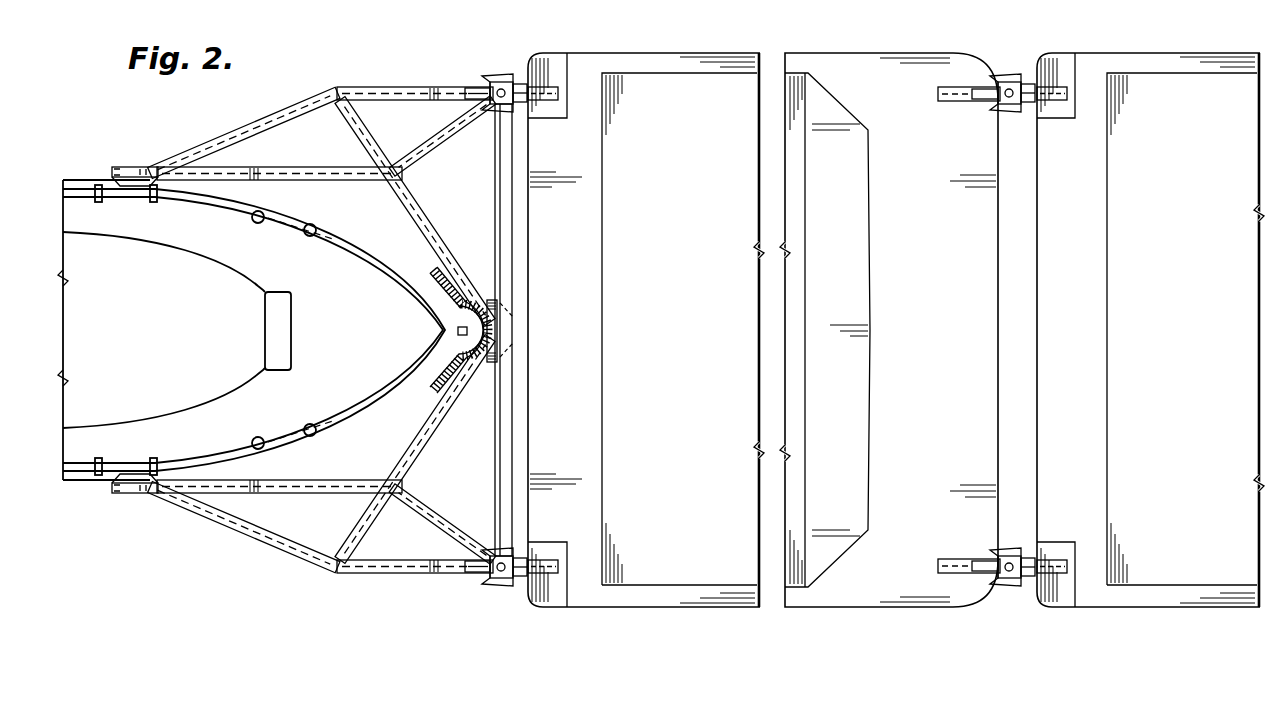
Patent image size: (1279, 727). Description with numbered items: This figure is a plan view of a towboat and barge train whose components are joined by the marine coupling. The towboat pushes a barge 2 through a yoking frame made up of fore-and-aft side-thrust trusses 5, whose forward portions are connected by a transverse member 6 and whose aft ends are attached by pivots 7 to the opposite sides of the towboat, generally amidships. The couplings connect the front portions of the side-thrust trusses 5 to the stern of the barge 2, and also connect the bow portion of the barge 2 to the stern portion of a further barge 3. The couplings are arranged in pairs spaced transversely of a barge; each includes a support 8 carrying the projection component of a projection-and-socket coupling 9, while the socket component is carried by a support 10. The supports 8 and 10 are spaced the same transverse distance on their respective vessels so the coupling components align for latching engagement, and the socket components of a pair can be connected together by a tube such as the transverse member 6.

The barge 2 is at (648, 603).
The barge 3 is at (1165, 600).
The fore-and-aft side-thrust trusses 5 is at (338, 86).
The transverse member 6 is at (496, 163).
The pivots 7 is at (132, 168).
The support 8 is at (548, 88).
The projection-and-socket coupling 9 is at (506, 77).
The support 10 is at (976, 94).